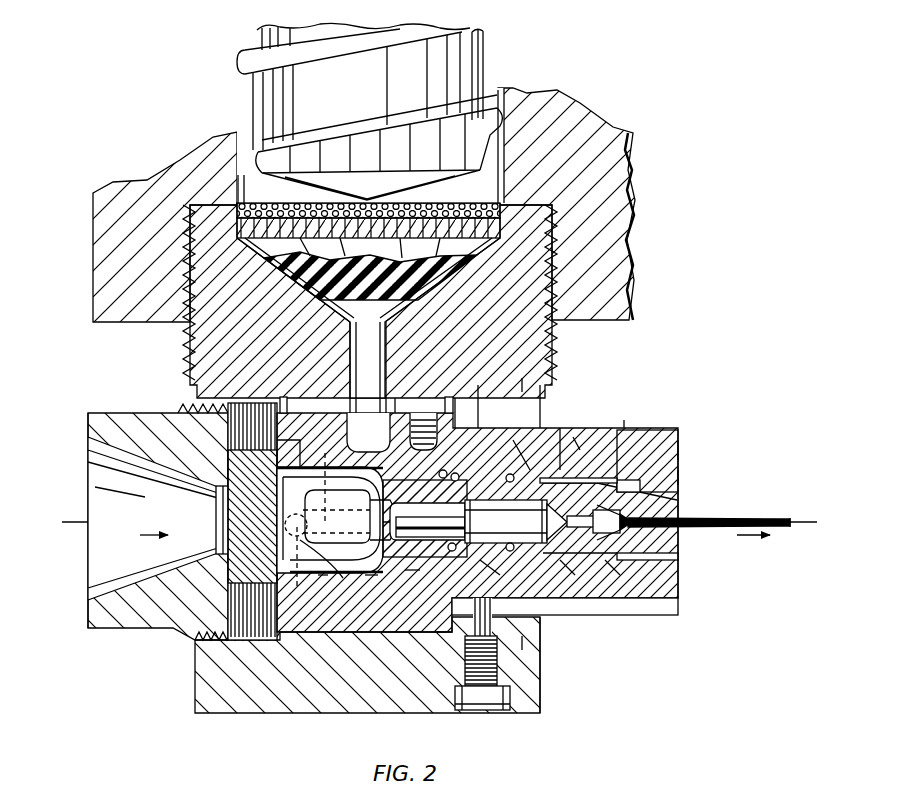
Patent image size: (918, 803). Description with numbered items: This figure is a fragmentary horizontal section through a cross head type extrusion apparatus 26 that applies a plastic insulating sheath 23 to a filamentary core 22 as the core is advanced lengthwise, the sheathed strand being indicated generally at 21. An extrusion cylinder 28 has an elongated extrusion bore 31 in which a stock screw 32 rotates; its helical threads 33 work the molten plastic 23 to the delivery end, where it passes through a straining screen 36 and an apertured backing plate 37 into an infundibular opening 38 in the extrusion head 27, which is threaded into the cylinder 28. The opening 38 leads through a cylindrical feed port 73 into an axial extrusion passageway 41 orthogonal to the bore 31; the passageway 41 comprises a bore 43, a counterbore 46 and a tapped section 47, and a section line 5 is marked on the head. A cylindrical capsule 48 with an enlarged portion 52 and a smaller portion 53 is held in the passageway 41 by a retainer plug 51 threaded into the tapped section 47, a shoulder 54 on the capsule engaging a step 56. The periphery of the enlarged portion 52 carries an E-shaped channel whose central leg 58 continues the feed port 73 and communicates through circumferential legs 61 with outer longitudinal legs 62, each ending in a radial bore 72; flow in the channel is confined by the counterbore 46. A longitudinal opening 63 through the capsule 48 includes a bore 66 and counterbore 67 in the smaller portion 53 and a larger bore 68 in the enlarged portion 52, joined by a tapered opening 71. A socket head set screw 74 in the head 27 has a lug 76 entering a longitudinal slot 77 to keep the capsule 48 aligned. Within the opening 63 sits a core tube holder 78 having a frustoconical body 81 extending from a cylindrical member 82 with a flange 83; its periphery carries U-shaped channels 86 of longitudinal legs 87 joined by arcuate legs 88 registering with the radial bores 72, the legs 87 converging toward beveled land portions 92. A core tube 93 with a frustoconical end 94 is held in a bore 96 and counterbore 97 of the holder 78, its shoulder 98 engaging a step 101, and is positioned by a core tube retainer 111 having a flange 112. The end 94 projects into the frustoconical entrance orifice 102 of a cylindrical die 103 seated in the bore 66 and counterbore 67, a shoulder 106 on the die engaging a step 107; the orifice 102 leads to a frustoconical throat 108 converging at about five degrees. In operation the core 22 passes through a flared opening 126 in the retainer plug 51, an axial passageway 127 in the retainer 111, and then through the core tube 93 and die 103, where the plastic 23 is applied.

The section line 5- 5 is at (532, 385).
The extrusion apparatus 21 is at (793, 486).
The filamentary core 22 is at (120, 525).
The plastic insulating sheath 23 is at (400, 258).
The cross head type extrusion apparatus 26 is at (608, 705).
The extrusion head 27 is at (197, 703).
The extrusion cylinder 28 is at (580, 110).
The extrusion bore 31 is at (495, 85).
The stock screw 32 is at (250, 92).
The helical threads 33 is at (385, 140).
The straining screen 36 is at (515, 200).
The apertured backing plate 37 is at (505, 215).
The infundibular opening 38 is at (405, 330).
The axial extrusion passageway 41 is at (549, 423).
The bore 43 is at (478, 385).
The counterbore 46 is at (312, 410).
The tapped section 47 is at (195, 410).
The tool holder or capsule 48 is at (697, 464).
The retainer plug 51 is at (118, 425).
The enlarged portion 52 is at (300, 402).
The smaller portion 53 is at (680, 458).
The shoulder 54 is at (455, 394).
The step 56 is at (413, 430).
The longitudinal central channel leg 58 is at (400, 394).
The circumferential channel legs 61 is at (383, 410).
The outer longitudinal channel legs 62 is at (327, 462).
The longitudinal opening 63 is at (714, 477).
The bore 66 is at (677, 450).
The counterbore 67 is at (624, 420).
The larger bore 68 is at (287, 465).
The tapered opening 71 is at (437, 473).
The radial bore 72 is at (281, 588).
The cylindrical feed port 73 is at (343, 352).
The socket head set screw 74 is at (487, 700).
The lug 76 is at (460, 605).
The longitudinal slot 77 is at (680, 614).
The core tube holder 78 is at (493, 470).
The frustoconical body 81 is at (413, 575).
The cylindrical member 82 is at (322, 580).
The flange 83 is at (260, 641).
The U-shaped channels 86 is at (370, 582).
The longitudinal channel legs 87 is at (350, 480).
The arcuate circumferential channel leg 88 is at (343, 582).
The beveled land portions 92 is at (513, 440).
The core tube 93 is at (490, 575).
The frustoconical end 94 is at (568, 572).
The bore 96 is at (583, 470).
The counterbore 97 is at (476, 490).
The shoulder 98 is at (573, 437).
The step 101 is at (505, 523).
The frustoconical entrance orifice 102 is at (612, 556).
The cylindrical die 103 is at (679, 545).
The shoulder 106 is at (603, 480).
The step 107 is at (615, 575).
The frustoconical throat 108 is at (683, 498).
The core tube retainer 111 is at (440, 640).
The flange 112 is at (187, 450).
The flared opening 126 is at (88, 465).
The axial passageway 127 is at (216, 505).